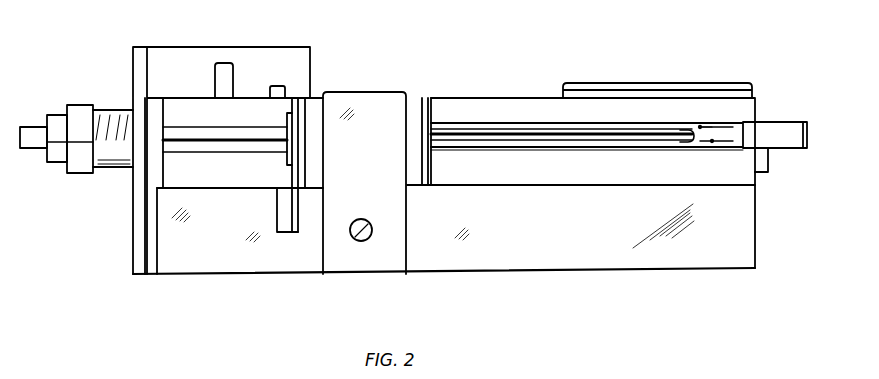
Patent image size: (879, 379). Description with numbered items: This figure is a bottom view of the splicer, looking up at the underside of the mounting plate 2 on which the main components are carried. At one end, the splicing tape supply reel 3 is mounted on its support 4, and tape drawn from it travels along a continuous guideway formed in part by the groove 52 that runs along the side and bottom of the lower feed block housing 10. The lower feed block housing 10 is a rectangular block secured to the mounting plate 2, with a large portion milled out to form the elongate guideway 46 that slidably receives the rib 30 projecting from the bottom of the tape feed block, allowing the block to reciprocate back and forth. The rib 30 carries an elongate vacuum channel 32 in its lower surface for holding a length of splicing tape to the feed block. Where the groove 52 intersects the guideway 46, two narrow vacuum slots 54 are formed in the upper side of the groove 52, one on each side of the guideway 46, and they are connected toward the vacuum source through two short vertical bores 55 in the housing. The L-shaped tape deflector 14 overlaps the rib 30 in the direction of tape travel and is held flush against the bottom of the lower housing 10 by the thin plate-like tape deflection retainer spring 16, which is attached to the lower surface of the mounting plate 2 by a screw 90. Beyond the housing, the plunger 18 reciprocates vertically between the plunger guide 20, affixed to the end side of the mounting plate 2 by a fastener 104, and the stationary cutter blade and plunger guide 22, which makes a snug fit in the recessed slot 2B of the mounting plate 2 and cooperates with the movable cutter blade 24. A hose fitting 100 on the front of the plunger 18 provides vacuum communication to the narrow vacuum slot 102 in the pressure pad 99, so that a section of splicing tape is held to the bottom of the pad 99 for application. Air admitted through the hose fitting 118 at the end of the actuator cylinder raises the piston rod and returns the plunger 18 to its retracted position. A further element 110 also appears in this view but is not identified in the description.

The mounting plate 2 is at (228, 270).
The recessed slot 2B is at (276, 212).
The splicing tape supply reel 3 is at (808, 122).
The support 4 is at (655, 84).
The lower feed block housing 10 is at (510, 98).
The tape deflector 14 is at (316, 176).
The tape deflection retainer spring 16 is at (363, 95).
The plunger 18 is at (232, 121).
The plunger guide 20 is at (135, 253).
The stationary cutter blade and plunger guide 22 is at (298, 234).
The movable cutter blade 24 is at (287, 118).
The rib 30 is at (578, 136).
The vacuum channel 32 is at (530, 137).
The guideway 46 is at (686, 142).
The groove 52 is at (745, 128).
The vacuum slots 54 is at (700, 126).
The short vertical bores 55 is at (711, 127).
The screw 90 is at (366, 240).
The pressure pad 99 is at (242, 152).
The hose fitting 100 is at (214, 75).
The vacuum slot 102 is at (200, 140).
The fastener 104 is at (137, 225).
The stop 110 is at (285, 92).
The hose fitting 118 is at (38, 150).